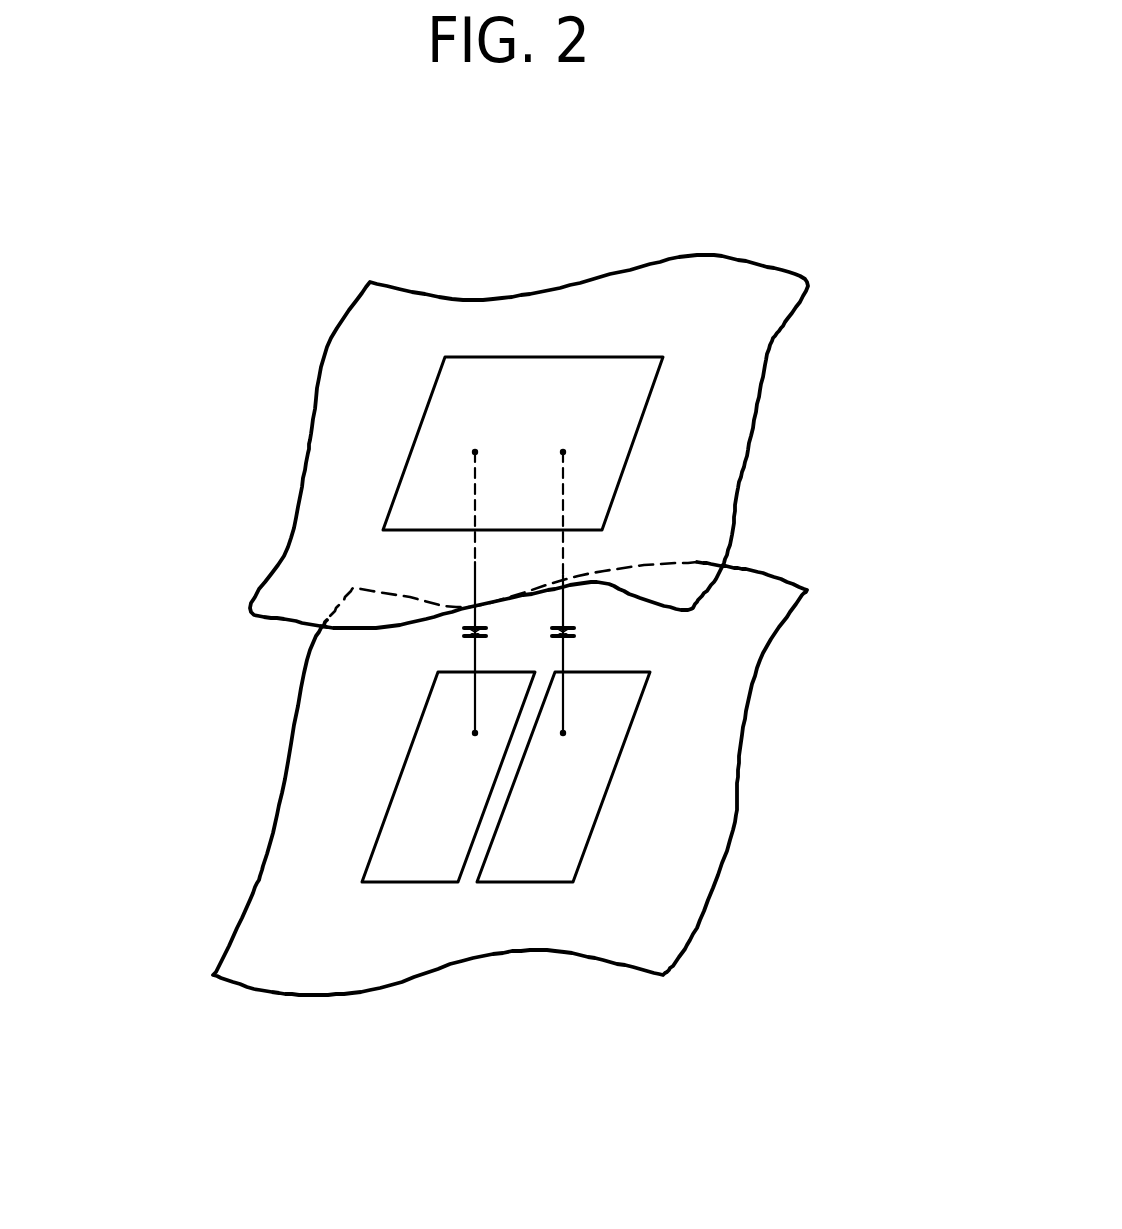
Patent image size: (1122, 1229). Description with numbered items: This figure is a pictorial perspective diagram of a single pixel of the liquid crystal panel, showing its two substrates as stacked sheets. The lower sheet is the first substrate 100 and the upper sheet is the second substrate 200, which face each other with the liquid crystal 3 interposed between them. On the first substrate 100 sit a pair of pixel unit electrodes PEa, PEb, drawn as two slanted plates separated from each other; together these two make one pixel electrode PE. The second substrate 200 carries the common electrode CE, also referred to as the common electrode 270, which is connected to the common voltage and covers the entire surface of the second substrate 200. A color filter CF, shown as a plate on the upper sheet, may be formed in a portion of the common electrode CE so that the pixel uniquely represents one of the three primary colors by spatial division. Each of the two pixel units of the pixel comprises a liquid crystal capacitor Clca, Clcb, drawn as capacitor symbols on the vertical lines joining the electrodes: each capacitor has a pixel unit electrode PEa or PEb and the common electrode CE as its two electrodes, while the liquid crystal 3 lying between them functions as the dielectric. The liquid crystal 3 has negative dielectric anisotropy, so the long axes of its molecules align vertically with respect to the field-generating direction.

The liquid crystal 3 is at (215, 640).
The common electrode 270 is at (635, 263).
The common electrode CE is at (757, 400).
The second substrate 200 is at (757, 470).
The color filter CF is at (623, 475).
The first substrate 100 is at (755, 783).
The pixel electrode PE is at (463, 1050).
The pixel unit electrode PEa is at (418, 882).
The pixel unit electrode PEb is at (503, 882).
The liquid crystal capacitor Clca is at (503, 592).
The liquid crystal capacitor Clcb is at (591, 592).